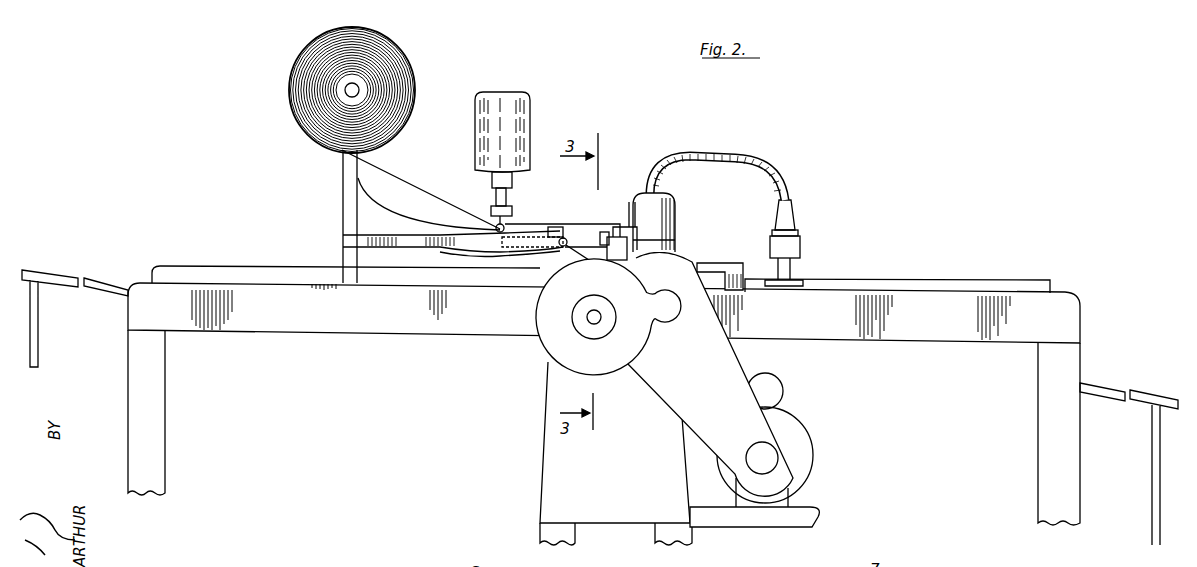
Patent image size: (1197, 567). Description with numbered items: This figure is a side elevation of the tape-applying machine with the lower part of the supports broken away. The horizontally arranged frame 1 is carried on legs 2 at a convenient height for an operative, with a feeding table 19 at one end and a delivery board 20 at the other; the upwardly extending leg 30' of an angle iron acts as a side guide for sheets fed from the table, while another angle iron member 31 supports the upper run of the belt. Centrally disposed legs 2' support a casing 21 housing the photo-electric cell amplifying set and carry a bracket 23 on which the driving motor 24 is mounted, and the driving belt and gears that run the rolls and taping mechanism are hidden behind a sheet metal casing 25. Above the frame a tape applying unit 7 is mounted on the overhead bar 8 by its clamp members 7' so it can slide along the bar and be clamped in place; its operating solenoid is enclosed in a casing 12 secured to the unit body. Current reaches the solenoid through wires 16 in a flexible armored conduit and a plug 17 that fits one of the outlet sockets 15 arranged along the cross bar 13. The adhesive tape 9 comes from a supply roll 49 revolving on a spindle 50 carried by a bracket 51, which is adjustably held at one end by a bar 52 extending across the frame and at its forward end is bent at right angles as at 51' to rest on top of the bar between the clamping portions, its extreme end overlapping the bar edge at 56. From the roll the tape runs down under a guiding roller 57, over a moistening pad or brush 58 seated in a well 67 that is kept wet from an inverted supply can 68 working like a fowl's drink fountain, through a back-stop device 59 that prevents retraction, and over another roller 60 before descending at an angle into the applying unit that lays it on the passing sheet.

The frame 1 is at (935, 330).
The legs 2 is at (604, 427).
The centrally disposed legs 2' is at (632, 539).
The tape applying unit 7 is at (655, 222).
The clamp members 7' is at (596, 237).
The overhead bar 8 is at (630, 252).
The adhesive tape 9 is at (410, 200).
The casing 12 is at (668, 203).
The cross bar 13 is at (800, 247).
The outlet sockets 15 is at (798, 233).
The wires 16 is at (742, 157).
The plug 17 is at (793, 215).
The feeding table 19 is at (62, 271).
The delivery board 20 is at (1142, 390).
The casing 21 is at (553, 468).
The bracket 23 is at (786, 527).
The driving motor 24 is at (810, 452).
The sheet metal casing 25 is at (652, 367).
The upwardly extending leg 30' is at (346, 262).
The angle iron member 31 is at (940, 283).
The supply roll 49 is at (409, 65).
The spindle 50 is at (357, 87).
The bracket 51 is at (334, 216).
The right-angle extension of bracket 51' is at (622, 218).
The bar 52 is at (351, 249).
The overlapping end of bracket 56 is at (676, 239).
The guiding roller 57 is at (498, 224).
The moistening pad or brush 58 is at (527, 238).
The back-stop device 59 is at (559, 227).
The roller 60 is at (562, 247).
The well 67 is at (500, 254).
The inverted supply can 68 is at (530, 114).